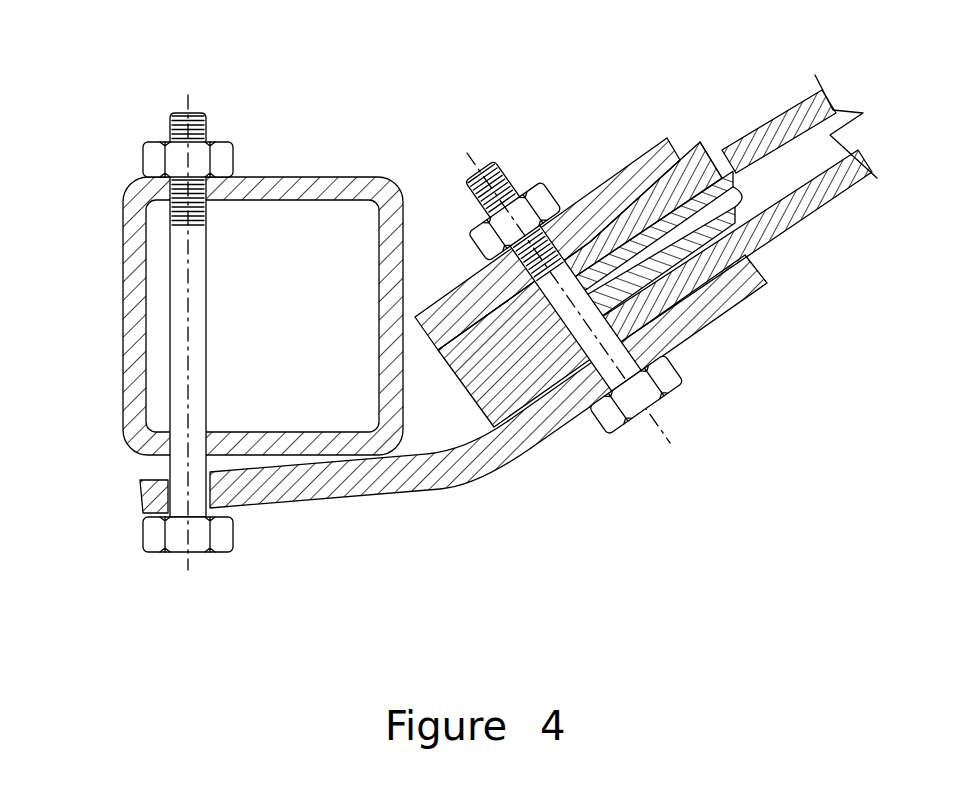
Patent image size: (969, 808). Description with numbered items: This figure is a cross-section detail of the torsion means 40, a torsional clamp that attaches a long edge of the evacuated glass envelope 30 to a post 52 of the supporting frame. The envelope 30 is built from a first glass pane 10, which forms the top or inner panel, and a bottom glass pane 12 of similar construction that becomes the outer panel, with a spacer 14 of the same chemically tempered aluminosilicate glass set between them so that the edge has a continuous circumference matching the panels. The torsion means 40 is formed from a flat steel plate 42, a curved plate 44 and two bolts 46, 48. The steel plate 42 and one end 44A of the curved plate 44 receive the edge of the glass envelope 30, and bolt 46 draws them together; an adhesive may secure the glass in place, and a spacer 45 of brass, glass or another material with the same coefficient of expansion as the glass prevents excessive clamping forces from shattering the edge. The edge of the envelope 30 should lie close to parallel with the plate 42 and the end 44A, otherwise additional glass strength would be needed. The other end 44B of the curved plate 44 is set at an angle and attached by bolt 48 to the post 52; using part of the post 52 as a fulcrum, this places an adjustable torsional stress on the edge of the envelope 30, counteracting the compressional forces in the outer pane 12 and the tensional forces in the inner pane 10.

The first glass pane 10 is at (760, 124).
The bottom glass pane 12 is at (787, 220).
The spacer 14 is at (733, 188).
The evacuated glass envelope 30 is at (814, 96).
The torsion means 40 is at (510, 464).
The flat steel plate 42 is at (642, 152).
The curved plate 44 is at (317, 500).
The end of curved plate 44A is at (745, 298).
The end of curved plate 44B is at (140, 498).
The spacer 45 is at (463, 383).
The bolt 46 is at (660, 395).
The bolt 48 is at (202, 553).
The post 52 is at (307, 177).